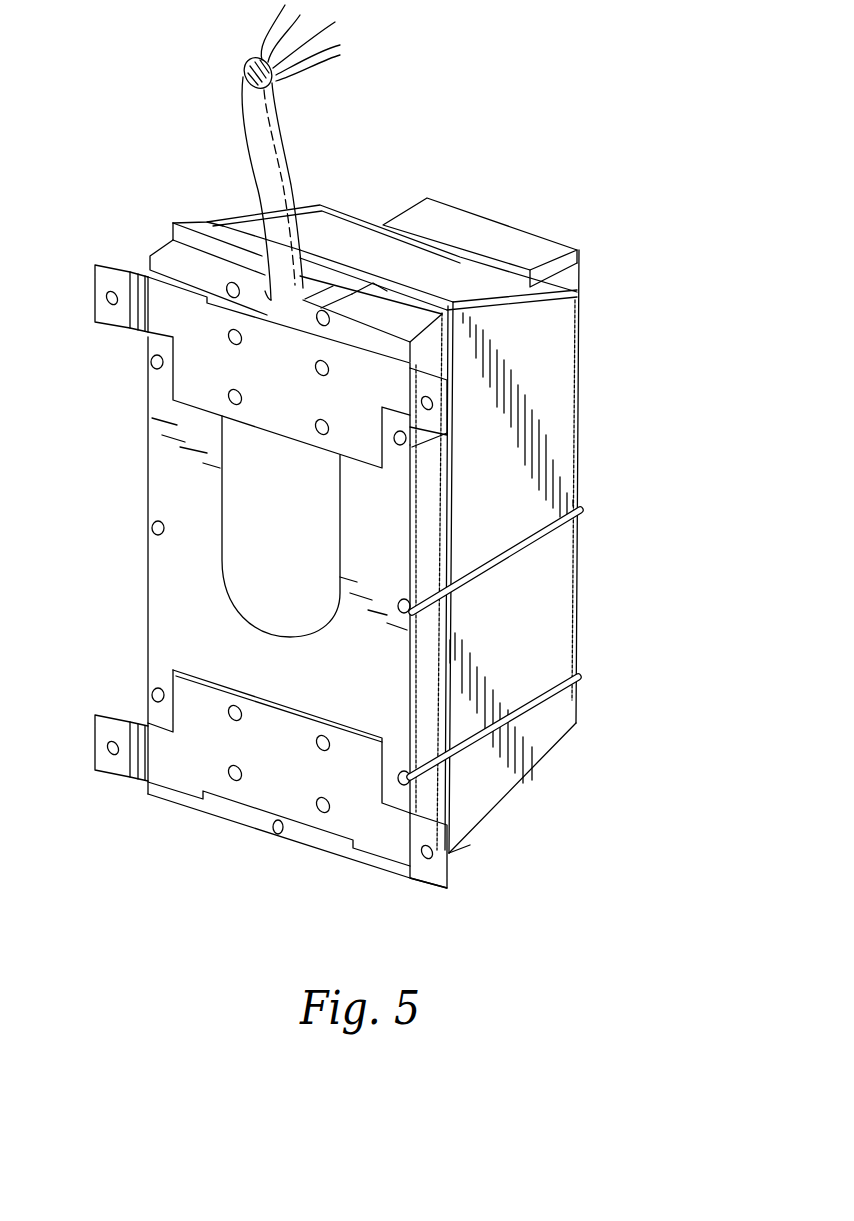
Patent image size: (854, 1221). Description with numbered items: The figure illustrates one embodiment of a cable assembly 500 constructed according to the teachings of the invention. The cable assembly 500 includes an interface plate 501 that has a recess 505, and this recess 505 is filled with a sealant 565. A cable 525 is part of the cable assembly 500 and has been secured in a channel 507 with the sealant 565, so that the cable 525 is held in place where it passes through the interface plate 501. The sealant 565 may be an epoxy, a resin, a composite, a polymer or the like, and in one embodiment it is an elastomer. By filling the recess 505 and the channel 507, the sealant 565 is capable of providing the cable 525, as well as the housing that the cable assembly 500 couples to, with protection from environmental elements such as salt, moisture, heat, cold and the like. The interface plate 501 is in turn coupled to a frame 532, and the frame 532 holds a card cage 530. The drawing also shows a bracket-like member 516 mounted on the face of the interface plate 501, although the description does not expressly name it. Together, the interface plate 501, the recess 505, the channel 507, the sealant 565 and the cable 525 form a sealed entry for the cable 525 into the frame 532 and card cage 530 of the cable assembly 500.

The cable assembly 500 is at (627, 777).
The interface plate 501 is at (418, 510).
The recess 505 is at (225, 582).
The channel 507 is at (250, 218).
The mounting bracket 516 is at (165, 317).
The cable 525 is at (279, 128).
The card cage 530 is at (545, 244).
The frame 532 is at (502, 810).
The sealant 565 is at (320, 584).